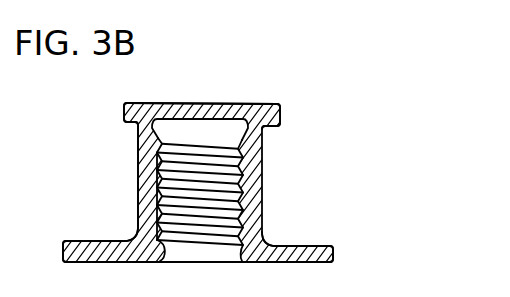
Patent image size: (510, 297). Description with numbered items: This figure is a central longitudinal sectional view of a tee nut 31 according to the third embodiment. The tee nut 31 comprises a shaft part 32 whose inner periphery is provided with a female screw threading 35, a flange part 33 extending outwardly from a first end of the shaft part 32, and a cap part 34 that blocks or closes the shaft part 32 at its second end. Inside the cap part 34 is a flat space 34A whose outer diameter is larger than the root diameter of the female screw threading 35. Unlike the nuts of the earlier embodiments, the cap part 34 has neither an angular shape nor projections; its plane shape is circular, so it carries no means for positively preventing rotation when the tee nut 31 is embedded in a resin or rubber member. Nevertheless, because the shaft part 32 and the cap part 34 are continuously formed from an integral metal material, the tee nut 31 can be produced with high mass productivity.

The tee nut 31 is at (313, 137).
The shaft part 32 is at (262, 162).
The flange part 33 is at (318, 245).
The cap part 34 is at (270, 108).
The flat space 34A is at (226, 125).
The female screw threading 35 is at (160, 187).